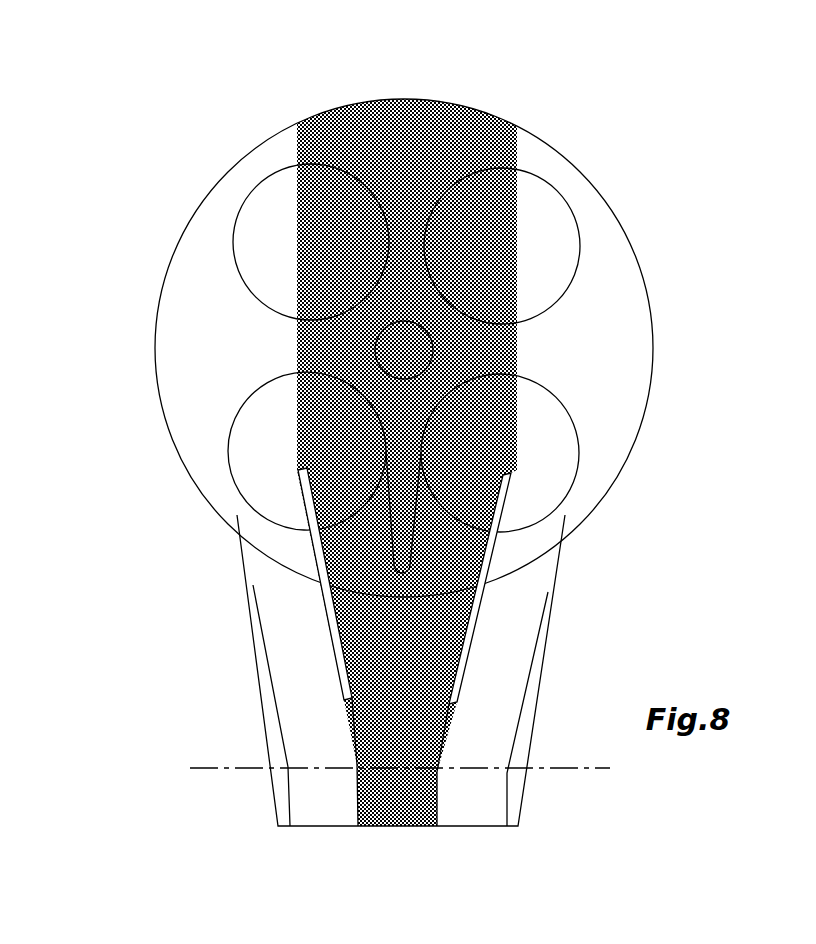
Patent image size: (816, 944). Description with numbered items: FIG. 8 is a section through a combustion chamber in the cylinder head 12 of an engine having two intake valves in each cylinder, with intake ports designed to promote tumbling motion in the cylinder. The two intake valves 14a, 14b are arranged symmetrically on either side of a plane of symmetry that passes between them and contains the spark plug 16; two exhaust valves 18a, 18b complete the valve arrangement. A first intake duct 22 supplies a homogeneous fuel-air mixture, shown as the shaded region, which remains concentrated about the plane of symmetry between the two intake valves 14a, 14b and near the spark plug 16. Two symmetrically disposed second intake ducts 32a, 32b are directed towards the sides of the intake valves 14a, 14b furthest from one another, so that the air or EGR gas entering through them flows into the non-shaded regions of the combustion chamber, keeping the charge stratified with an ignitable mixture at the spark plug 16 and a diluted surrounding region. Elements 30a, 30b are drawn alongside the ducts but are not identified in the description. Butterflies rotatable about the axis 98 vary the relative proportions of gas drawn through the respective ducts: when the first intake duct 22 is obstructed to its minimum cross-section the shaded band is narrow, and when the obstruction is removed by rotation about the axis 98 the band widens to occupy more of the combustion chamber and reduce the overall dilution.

The cylinder head 12 is at (312, 118).
The intake valve 14a is at (268, 460).
The intake valve 14b is at (535, 467).
The spark plug 16 is at (400, 347).
The exhaust valve 18a is at (273, 242).
The exhaust valve 18b is at (537, 247).
The first intake duct 22 is at (402, 805).
The left guide slot 30a is at (317, 557).
The right guide slot 30b is at (483, 563).
The second intake duct 32a is at (290, 697).
The second intake duct 32b is at (507, 703).
The axis 98 is at (237, 767).